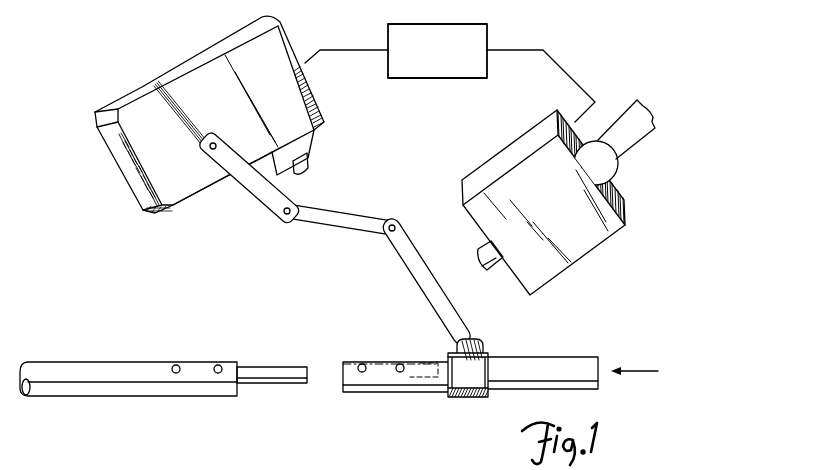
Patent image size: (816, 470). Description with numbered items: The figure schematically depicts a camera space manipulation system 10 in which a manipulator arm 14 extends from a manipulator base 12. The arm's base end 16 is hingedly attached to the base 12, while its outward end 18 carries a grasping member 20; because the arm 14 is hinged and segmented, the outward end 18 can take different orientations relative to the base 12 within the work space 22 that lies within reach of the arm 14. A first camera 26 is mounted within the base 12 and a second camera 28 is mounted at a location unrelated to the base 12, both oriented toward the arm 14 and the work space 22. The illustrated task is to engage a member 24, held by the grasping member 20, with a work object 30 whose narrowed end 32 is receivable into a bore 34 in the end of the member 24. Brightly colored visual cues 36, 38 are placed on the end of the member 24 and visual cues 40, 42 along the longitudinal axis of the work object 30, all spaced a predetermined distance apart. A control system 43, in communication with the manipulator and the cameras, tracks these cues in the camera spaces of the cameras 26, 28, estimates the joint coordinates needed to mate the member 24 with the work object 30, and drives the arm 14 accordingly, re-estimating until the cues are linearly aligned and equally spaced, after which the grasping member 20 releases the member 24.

The camera space manipulation system 10 is at (580, 52).
The manipulator base 12 is at (136, 87).
The manipulator arm 14 is at (366, 238).
The base end 16 is at (273, 208).
The outward end 18 is at (447, 305).
The grasping member 20 is at (467, 333).
The work space 22 is at (235, 373).
The member 24 is at (535, 350).
The first camera 26 is at (302, 151).
The second camera 28 is at (585, 248).
The work object 30 is at (125, 365).
The narrowed end 32 is at (272, 365).
The bore 34 is at (410, 364).
The visual cue 36 is at (394, 360).
The visual cue 38 is at (366, 360).
The visual cue 40 is at (218, 364).
The visual cue 42 is at (176, 364).
The control system 43 is at (462, 23).